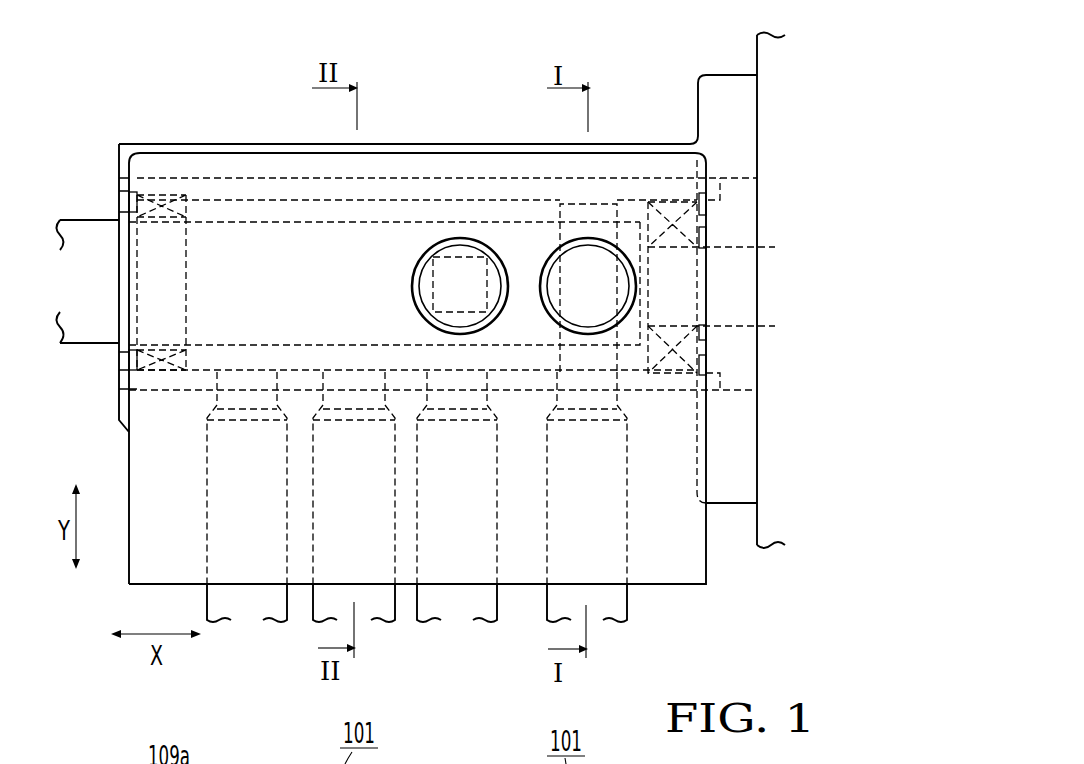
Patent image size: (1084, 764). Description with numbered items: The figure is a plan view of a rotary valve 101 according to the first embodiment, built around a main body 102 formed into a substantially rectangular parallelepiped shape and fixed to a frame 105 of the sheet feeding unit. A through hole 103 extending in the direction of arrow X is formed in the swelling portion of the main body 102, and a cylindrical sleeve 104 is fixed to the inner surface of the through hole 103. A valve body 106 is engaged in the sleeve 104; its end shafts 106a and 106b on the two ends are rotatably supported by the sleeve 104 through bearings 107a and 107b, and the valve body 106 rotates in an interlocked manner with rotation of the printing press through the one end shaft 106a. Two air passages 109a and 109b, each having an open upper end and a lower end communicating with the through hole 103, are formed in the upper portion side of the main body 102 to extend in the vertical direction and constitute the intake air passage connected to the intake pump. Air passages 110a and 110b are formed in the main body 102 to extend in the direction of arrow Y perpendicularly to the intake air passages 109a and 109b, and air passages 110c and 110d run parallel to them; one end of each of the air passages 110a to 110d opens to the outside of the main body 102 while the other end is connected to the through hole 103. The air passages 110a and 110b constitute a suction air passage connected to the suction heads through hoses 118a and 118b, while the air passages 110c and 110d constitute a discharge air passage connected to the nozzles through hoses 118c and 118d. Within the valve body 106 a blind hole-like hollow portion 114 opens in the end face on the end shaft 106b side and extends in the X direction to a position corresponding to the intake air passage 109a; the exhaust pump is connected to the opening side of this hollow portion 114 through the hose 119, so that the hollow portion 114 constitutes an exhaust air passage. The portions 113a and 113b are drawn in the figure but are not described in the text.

The connector 101 is at (468, 86).
The main body 102 is at (707, 550).
The through hole 103 is at (592, 186).
The cylindrical sleeve 104 is at (506, 192).
The frame 105 is at (720, 72).
The valve body 106 is at (401, 211).
The end shaft 106a is at (685, 287).
The end shaft 106b is at (133, 210).
The bearing 107a is at (673, 210).
The bearing 107b is at (163, 207).
The air passage 109a is at (540, 289).
The air passage 109b is at (510, 282).
The air passage 110a is at (626, 562).
The air passage 110b is at (497, 562).
The air passage 110c is at (395, 562).
The air passage 110d is at (287, 557).
The press-fit portion 113a is at (556, 215).
The press-fit portion 113b is at (460, 257).
The hollow portion 114 is at (253, 231).
The hose 118a is at (628, 615).
The hose 118b is at (498, 615).
The hose 118c is at (396, 615).
The hose 118d is at (207, 603).
The hose 119 is at (80, 345).